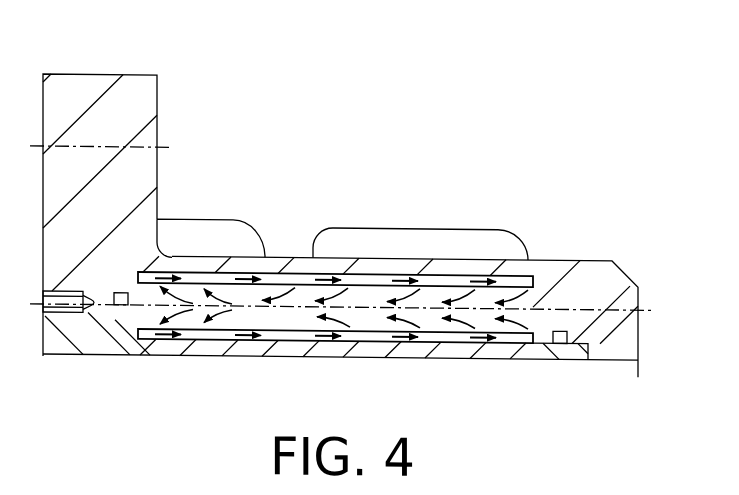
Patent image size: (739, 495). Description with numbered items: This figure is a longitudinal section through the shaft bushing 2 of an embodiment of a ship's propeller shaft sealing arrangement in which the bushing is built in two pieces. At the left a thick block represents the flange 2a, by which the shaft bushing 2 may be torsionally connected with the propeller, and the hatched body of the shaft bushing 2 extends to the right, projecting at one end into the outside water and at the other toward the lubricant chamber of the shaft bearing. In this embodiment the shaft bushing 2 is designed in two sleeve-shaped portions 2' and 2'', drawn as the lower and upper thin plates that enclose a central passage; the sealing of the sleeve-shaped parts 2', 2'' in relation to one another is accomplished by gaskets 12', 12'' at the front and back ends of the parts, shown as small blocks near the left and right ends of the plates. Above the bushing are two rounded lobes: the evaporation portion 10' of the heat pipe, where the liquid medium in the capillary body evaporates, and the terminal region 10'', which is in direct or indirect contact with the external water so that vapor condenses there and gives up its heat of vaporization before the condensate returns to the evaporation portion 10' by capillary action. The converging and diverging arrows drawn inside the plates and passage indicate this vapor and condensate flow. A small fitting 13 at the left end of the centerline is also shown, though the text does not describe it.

The shaft bushing 2 is at (342, 281).
The flange 2a is at (135, 98).
The sleeve-shaped portion 2' is at (335, 374).
The sleeve-shaped portion 2'' is at (335, 214).
The evaporation portion 10' is at (420, 205).
The terminal regions 10'' is at (211, 207).
The gasket 12' is at (146, 347).
The gasket 12'' is at (582, 377).
The nozzle 13 is at (63, 316).